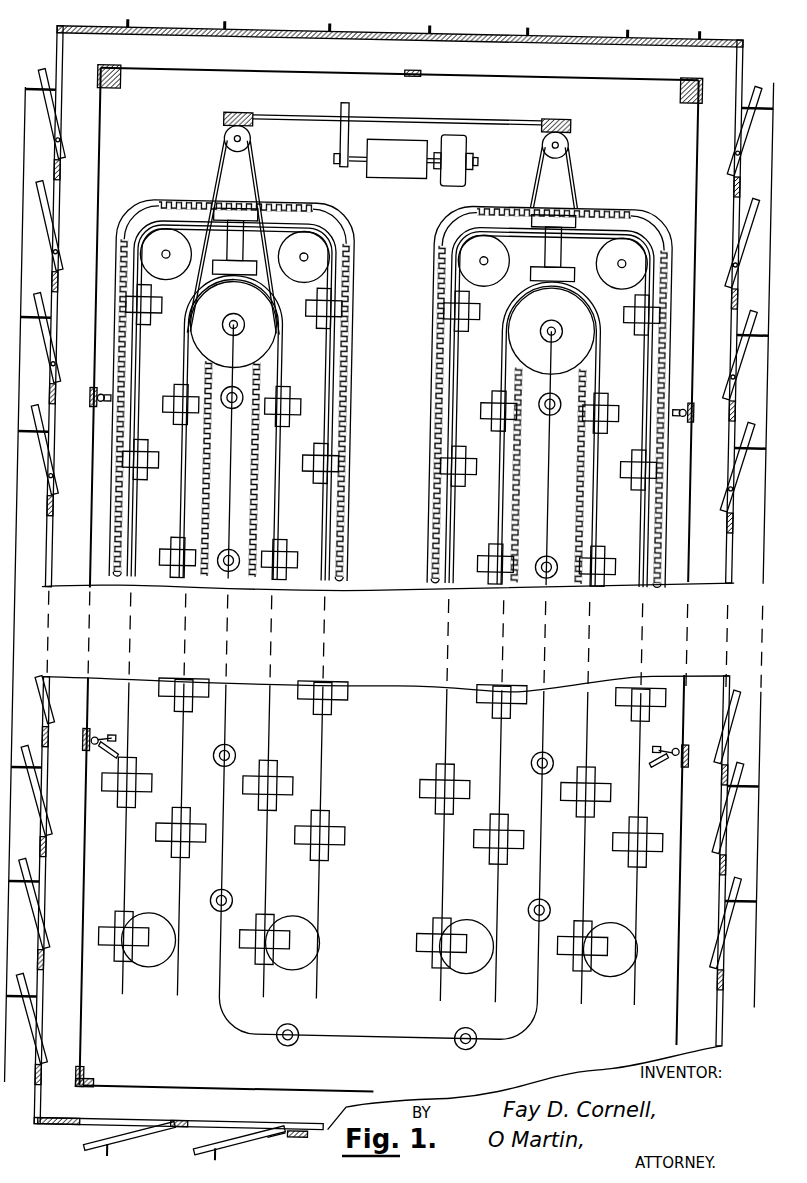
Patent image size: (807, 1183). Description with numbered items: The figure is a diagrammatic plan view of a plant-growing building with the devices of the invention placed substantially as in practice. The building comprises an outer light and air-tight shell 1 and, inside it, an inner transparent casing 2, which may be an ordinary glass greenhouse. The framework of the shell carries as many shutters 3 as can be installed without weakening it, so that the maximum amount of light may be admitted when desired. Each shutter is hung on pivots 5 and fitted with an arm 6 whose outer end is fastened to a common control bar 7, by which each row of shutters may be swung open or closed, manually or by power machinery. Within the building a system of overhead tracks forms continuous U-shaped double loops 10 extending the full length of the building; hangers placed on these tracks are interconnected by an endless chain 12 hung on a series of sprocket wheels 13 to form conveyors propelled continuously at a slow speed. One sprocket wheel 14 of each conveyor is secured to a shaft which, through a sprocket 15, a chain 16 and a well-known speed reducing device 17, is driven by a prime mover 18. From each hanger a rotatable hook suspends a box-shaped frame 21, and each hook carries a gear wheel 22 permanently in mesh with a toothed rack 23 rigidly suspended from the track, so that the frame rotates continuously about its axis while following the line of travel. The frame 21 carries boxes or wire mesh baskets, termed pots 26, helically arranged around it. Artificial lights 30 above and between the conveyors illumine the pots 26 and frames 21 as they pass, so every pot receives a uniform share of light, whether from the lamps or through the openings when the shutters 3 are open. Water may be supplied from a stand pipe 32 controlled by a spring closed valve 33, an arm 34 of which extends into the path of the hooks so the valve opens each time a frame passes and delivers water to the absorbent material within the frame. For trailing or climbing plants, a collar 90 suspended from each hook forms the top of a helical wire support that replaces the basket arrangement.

The outer light and air-tight shell 1 is at (50, 588).
The inner transparent casing 2 is at (93, 752).
The shutters 3 is at (59, 380).
The pivots 5 is at (738, 381).
The arm 6 is at (219, 36).
The common control bar 7 is at (23, 543).
The U-shaped double loop tracks 10 is at (142, 378).
The endless chain 12 is at (143, 217).
The sprocket wheels 13 is at (180, 283).
The sprocket wheel 14 is at (270, 332).
The sprocket 15 is at (248, 143).
The chain 16 is at (256, 199).
The speed reducing device 17 is at (398, 172).
The prime mover 18 is at (452, 184).
The box-shaped frame 21 is at (282, 768).
The gear wheel 22 is at (146, 318).
The toothed rack 23 is at (180, 207).
The pots 26 is at (289, 395).
The artificial lights 30 is at (553, 414).
The stand pipe 32 is at (105, 399).
The spring closed valve 33 is at (121, 742).
The valve arm 34 is at (114, 757).
The collar 90 is at (556, 507).